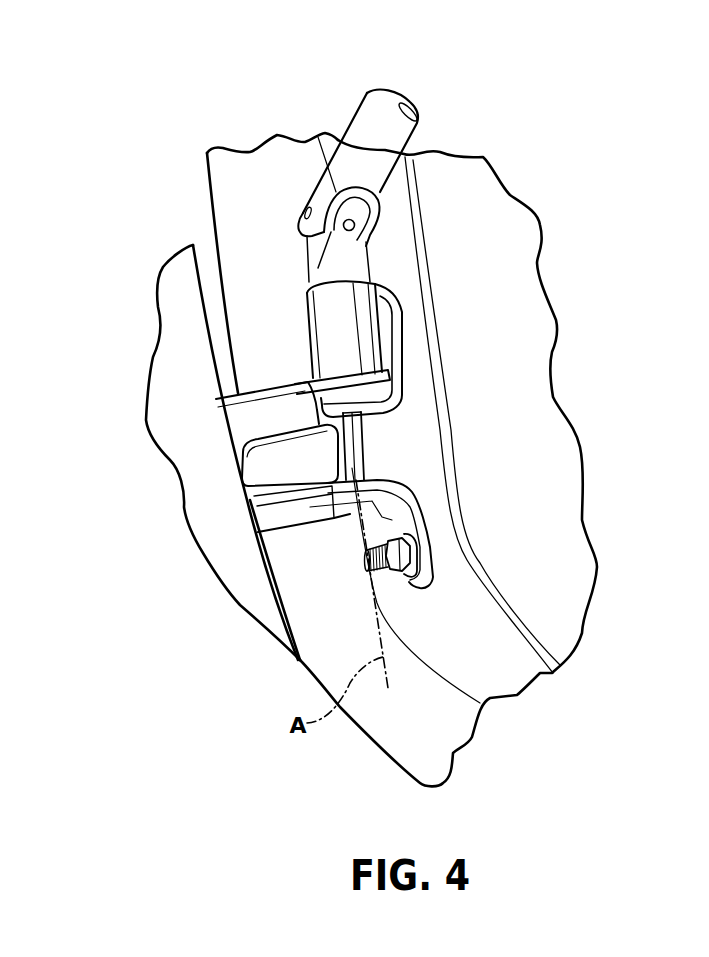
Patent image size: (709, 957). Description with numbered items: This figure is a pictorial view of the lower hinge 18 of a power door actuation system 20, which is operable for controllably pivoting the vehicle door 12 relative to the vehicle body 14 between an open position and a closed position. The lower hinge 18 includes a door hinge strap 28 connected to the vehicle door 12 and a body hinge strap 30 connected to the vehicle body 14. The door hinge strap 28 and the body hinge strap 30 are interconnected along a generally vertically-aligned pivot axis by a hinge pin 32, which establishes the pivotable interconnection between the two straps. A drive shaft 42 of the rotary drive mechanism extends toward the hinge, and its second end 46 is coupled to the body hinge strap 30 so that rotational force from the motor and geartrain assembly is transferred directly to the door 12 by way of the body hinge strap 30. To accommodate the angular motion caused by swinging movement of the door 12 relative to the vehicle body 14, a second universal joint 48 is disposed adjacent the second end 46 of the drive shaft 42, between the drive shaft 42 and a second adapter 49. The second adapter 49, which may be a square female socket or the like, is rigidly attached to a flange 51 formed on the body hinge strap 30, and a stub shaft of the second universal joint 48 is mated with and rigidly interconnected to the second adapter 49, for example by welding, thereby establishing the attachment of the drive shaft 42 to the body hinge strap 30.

The vehicle door 12 is at (508, 238).
The vehicle body 14 is at (160, 420).
The lower hinge 18 is at (341, 532).
The power door actuation system 20 is at (248, 209).
The door hinge strap 28 is at (400, 370).
The body hinge strap 30 is at (255, 500).
The hinge pin 32 is at (357, 443).
The drive shaft 42 is at (366, 91).
The second end of drive shaft 46 is at (357, 167).
The second universal joint 48 is at (350, 230).
The second adapter 49 is at (328, 323).
The flange 51 is at (333, 380).